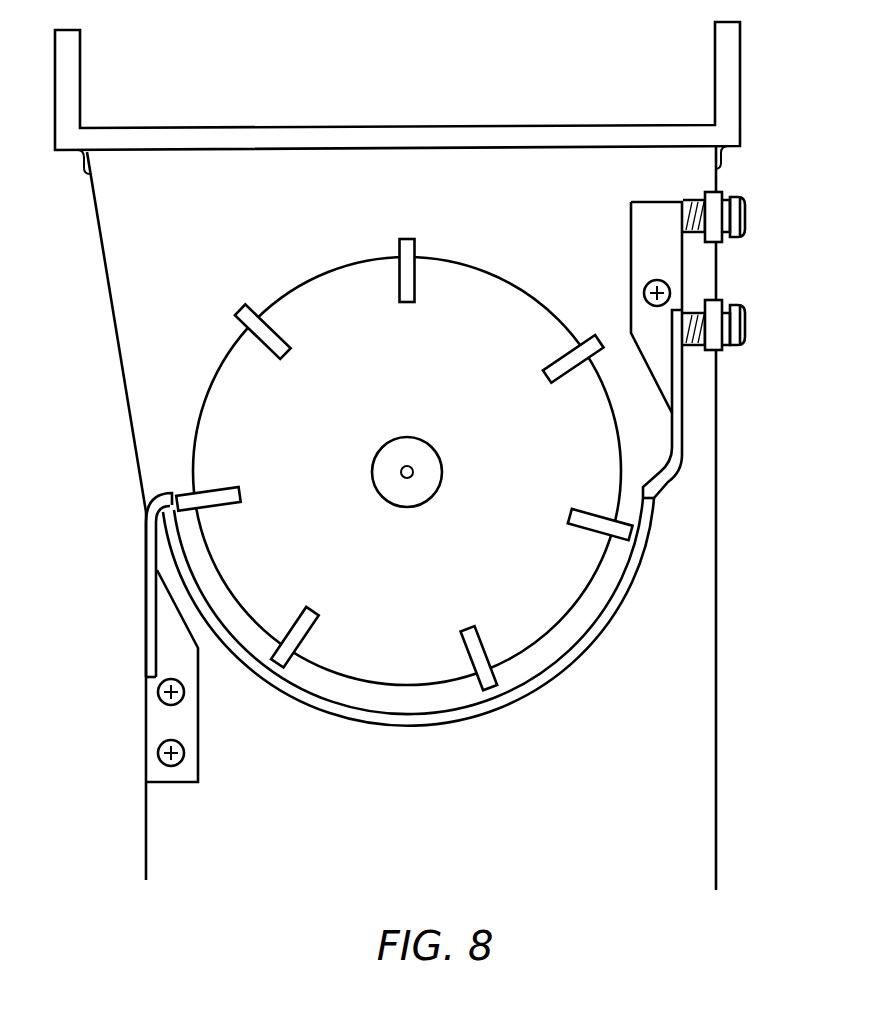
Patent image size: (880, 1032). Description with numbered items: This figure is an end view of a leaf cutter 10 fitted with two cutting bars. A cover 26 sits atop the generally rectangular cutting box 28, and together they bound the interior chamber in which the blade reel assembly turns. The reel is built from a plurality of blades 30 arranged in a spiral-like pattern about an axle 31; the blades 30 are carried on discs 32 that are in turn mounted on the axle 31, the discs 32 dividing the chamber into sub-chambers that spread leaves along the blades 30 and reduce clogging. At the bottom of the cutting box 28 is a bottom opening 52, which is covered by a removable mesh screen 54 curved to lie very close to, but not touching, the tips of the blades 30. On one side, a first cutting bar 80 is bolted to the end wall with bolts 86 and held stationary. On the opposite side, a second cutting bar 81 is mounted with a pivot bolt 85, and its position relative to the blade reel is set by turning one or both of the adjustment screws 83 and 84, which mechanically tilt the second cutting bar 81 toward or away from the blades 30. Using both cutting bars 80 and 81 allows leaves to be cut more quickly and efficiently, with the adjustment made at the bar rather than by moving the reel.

The metering apparatus 10 is at (88, 323).
The cover 26 is at (745, 83).
The cutting box 28 is at (174, 224).
The blades 30 is at (397, 285).
The axle 31 is at (398, 462).
The discs 32 is at (378, 379).
The bottom opening 52 is at (310, 877).
The mesh screen 54 is at (527, 690).
The first cutting bar 80 is at (148, 550).
The second cutting bar 81 is at (680, 425).
The adjustment screw 83 is at (757, 212).
The adjustment screw 84 is at (757, 325).
The pivot bolt 85 is at (672, 292).
The bolts 86 is at (158, 692).